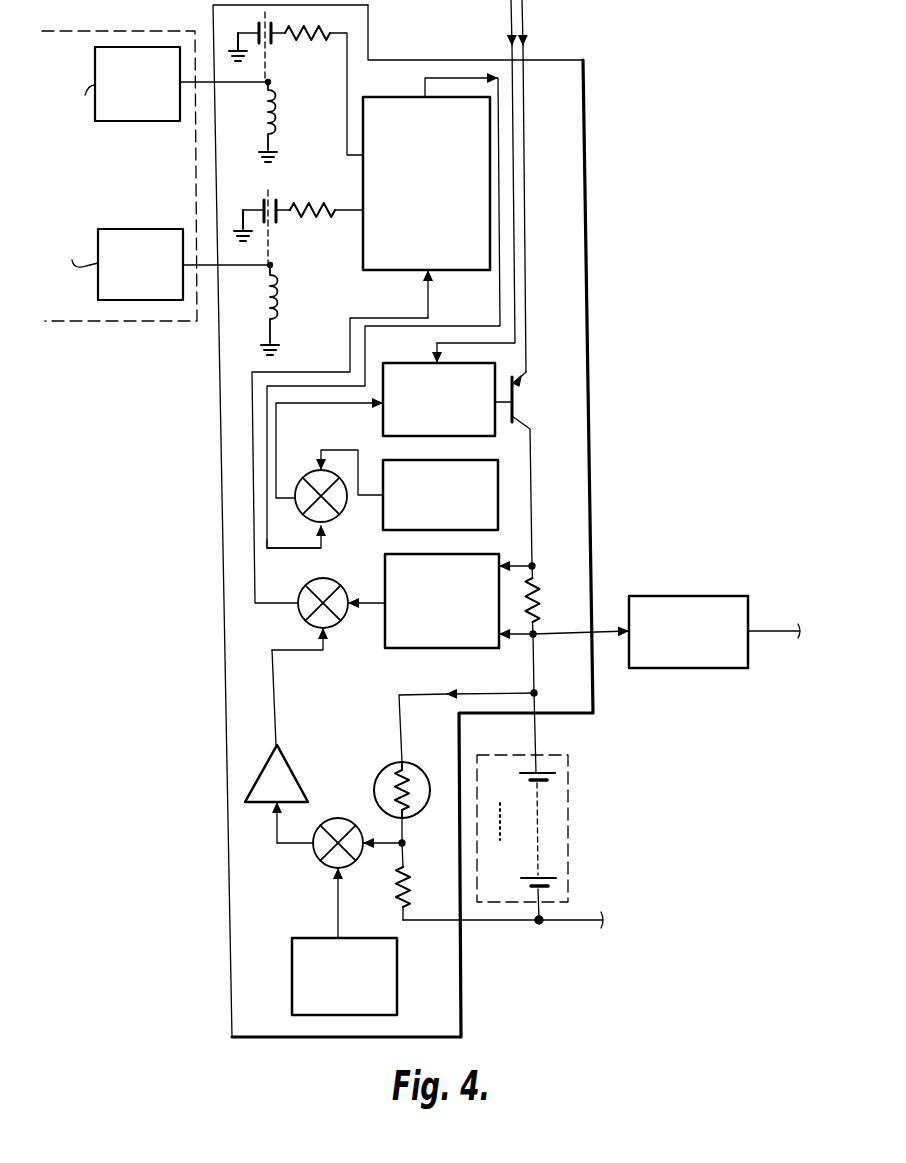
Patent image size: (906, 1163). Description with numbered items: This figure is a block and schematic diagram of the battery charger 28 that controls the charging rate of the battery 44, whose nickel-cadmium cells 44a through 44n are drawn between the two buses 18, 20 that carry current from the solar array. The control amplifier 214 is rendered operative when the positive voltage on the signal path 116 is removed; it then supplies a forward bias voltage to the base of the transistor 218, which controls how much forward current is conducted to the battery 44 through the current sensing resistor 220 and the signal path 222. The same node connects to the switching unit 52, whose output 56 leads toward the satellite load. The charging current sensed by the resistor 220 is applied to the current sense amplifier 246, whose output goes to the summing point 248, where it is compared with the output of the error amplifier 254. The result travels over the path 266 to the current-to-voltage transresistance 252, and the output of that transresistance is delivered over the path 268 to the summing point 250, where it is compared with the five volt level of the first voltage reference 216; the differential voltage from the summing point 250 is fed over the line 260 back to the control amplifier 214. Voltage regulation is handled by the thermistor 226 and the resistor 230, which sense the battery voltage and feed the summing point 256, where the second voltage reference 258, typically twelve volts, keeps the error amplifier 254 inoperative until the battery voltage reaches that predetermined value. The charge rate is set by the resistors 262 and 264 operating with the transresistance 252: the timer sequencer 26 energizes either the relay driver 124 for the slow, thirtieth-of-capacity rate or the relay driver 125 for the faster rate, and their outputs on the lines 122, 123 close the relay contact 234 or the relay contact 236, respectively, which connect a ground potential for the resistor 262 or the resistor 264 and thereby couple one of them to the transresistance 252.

The timer sequencer 26 is at (118, 30).
The relay driver 124 is at (101, 46).
The relay driver 125 is at (136, 230).
The relay driver output line 122 is at (205, 113).
The relay driver output line 123 is at (213, 300).
The battery charger 28 is at (368, 24).
The relay contact 234 is at (276, 40).
The resistor 262 is at (312, 44).
The relay contact 236 is at (243, 210).
The resistor 264 is at (312, 182).
The current-to-voltage transresistance 252 is at (363, 237).
The signal path 116 is at (509, 24).
The bus 18 is at (525, 24).
The amplifier 214 is at (422, 359).
The transistor 218 is at (524, 386).
The voltage reference (1) 216 is at (498, 491).
The control amplifier input line 260 is at (313, 404).
The summing point 250 is at (339, 517).
The path 268 is at (316, 549).
The current sense amplifier 246 is at (384, 570).
The path 266 is at (257, 590).
The summing point 248 is at (341, 620).
The current sensing resistor 220 is at (543, 598).
The signal path 222 is at (530, 664).
The switching unit 52 is at (687, 578).
The switching logic output 56 is at (767, 613).
The error amplifier 254 is at (303, 742).
The thermistor 226 is at (427, 778).
The summing point 256 is at (322, 875).
The resistor 230 is at (416, 882).
The voltage reference (2) 258 is at (328, 938).
The battery 44 is at (545, 806).
The battery cell 44a is at (521, 775).
The battery cell 44n is at (529, 877).
The bus 20 is at (567, 921).